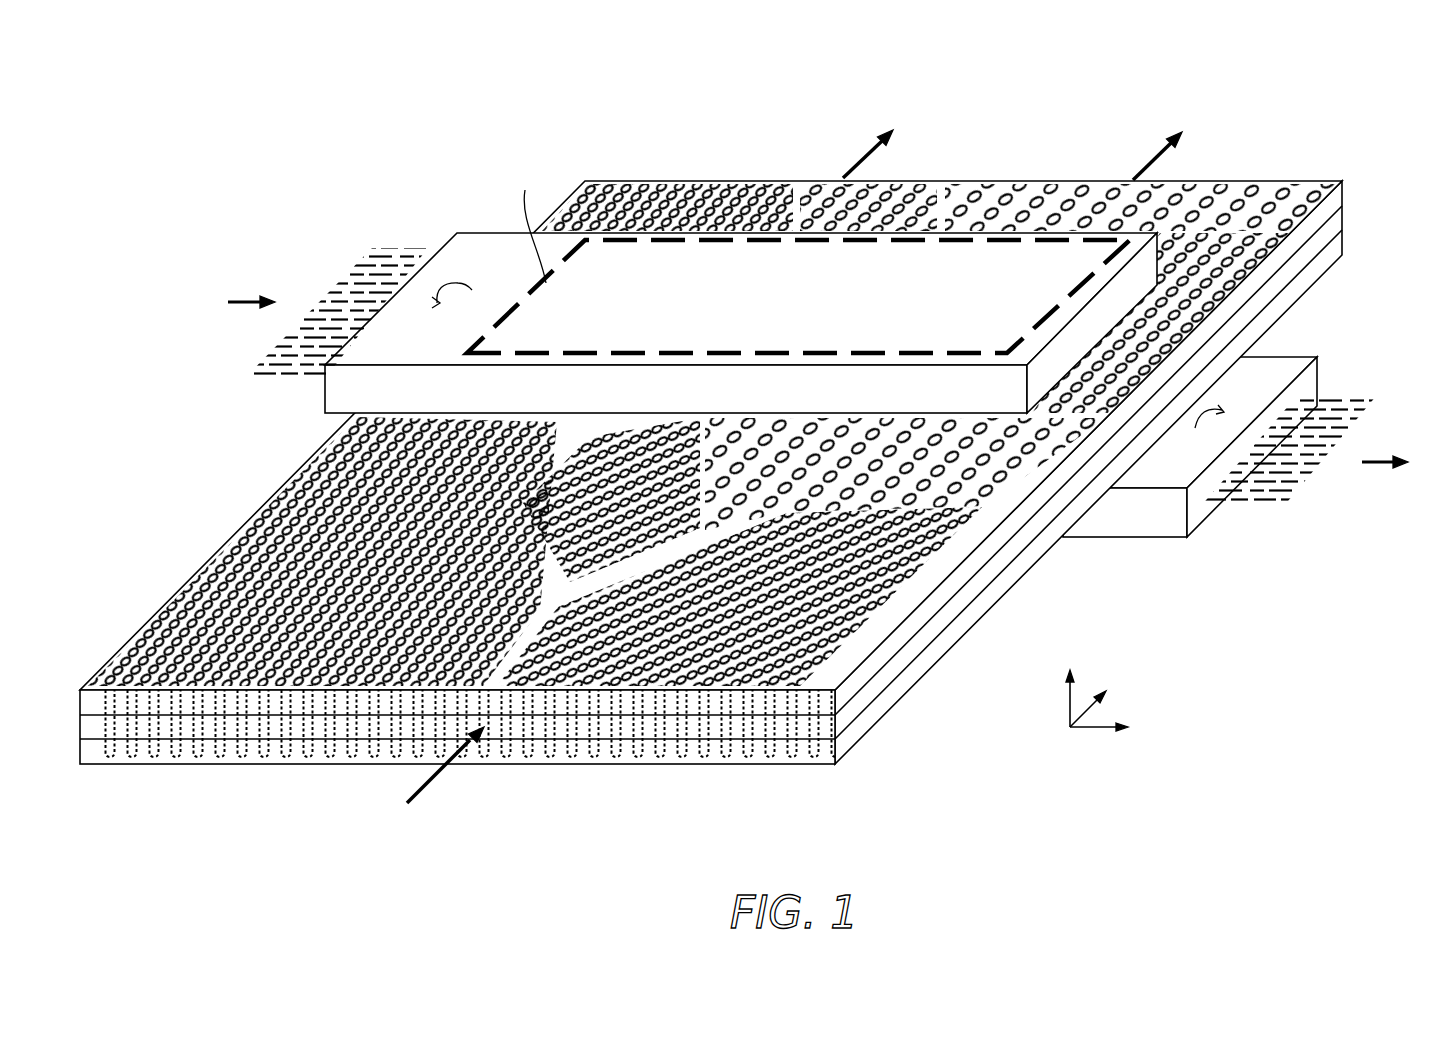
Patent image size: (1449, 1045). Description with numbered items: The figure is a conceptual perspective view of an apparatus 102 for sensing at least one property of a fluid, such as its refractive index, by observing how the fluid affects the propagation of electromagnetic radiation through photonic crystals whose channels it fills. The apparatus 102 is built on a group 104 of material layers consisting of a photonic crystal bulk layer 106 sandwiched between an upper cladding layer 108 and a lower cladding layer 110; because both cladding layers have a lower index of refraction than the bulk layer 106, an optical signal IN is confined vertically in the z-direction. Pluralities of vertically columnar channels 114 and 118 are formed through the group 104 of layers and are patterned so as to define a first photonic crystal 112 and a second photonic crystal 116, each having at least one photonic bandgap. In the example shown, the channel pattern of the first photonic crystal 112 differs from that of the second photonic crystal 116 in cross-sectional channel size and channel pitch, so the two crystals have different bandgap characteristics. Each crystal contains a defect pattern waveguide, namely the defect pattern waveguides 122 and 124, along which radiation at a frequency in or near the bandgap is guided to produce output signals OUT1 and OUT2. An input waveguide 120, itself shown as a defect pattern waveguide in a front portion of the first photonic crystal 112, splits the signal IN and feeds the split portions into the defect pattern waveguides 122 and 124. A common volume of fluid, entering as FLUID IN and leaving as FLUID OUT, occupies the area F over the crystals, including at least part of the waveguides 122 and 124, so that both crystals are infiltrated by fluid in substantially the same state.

The apparatus 102 is at (322, 122).
The group of material layers 104 is at (862, 692).
The photonic crystal bulk layer 106 is at (1345, 210).
The upper cladding layer 108 is at (1345, 188).
The lower cladding layer 110 is at (1345, 252).
The first photonic crystal 112 is at (322, 551).
The vertically columnar channels 114 is at (765, 186).
The second photonic crystal 116 is at (998, 381).
The vertically columnar channels 118 is at (1315, 189).
The input waveguide 120 is at (510, 647).
The defect pattern waveguide 122 is at (570, 440).
The defect pattern waveguide 124 is at (862, 440).